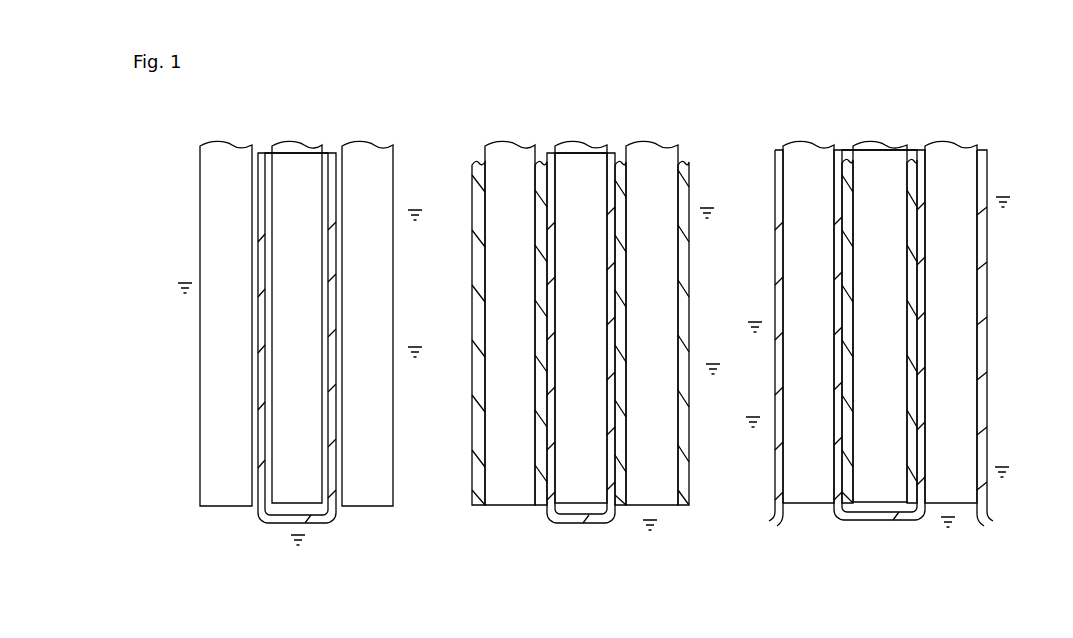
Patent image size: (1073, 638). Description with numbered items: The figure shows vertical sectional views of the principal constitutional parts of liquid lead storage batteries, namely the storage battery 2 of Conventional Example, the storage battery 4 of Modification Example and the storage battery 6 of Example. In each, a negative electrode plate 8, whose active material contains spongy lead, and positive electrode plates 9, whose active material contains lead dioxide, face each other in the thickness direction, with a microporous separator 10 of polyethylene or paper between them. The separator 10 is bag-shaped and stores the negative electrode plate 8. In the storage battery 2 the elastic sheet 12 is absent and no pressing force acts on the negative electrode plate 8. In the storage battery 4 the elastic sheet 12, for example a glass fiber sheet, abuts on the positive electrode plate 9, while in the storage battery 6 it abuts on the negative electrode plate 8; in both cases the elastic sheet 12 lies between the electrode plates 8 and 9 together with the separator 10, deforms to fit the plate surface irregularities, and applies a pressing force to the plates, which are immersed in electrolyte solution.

The storage battery of Conventional Example 2 is at (300, 418).
The storage battery of Modification Example 4 is at (610, 417).
The storage battery of Example 6 is at (878, 411).
The negative electrode plate 8 is at (297, 145).
The positive electrode plate 9 is at (226, 143).
The microporous separator 10 is at (261, 153).
The elastic sheet 12 is at (480, 242).